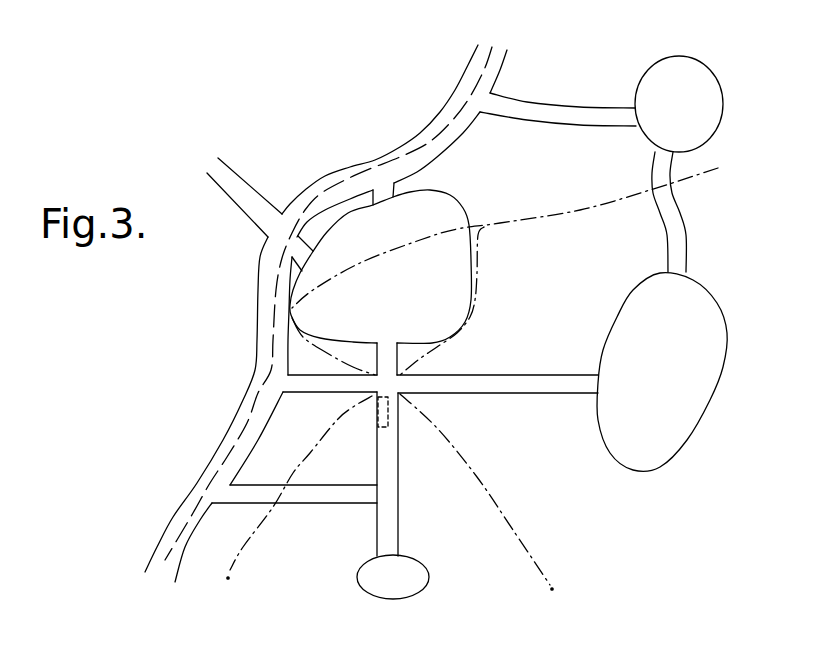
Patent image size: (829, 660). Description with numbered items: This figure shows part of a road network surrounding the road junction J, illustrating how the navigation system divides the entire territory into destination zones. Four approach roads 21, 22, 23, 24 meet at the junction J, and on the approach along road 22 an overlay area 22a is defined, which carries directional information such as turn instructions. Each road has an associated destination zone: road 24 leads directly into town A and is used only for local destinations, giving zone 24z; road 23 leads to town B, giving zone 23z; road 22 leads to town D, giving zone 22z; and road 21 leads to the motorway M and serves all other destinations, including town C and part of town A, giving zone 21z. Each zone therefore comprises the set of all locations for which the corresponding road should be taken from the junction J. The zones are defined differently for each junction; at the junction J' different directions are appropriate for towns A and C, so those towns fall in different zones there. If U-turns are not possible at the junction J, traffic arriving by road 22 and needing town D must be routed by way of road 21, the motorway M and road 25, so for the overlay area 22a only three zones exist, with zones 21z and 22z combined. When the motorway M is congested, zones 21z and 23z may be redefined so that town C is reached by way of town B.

The approach road 21 is at (317, 387).
The destination zone 21z is at (364, 122).
The approach road 22 is at (397, 455).
The overlay area 22a is at (375, 421).
The destination zone 22z is at (476, 544).
The approach road 23 is at (527, 393).
The destination zone 23z is at (553, 342).
The approach road 24 is at (385, 352).
The destination zone 24z is at (418, 307).
The road 25 is at (312, 505).
The town A is at (465, 213).
The town B is at (673, 376).
The town C is at (686, 119).
The town D is at (401, 589).
The road junction J is at (433, 412).
The road junction J' is at (438, 58).
The motorway M is at (233, 432).